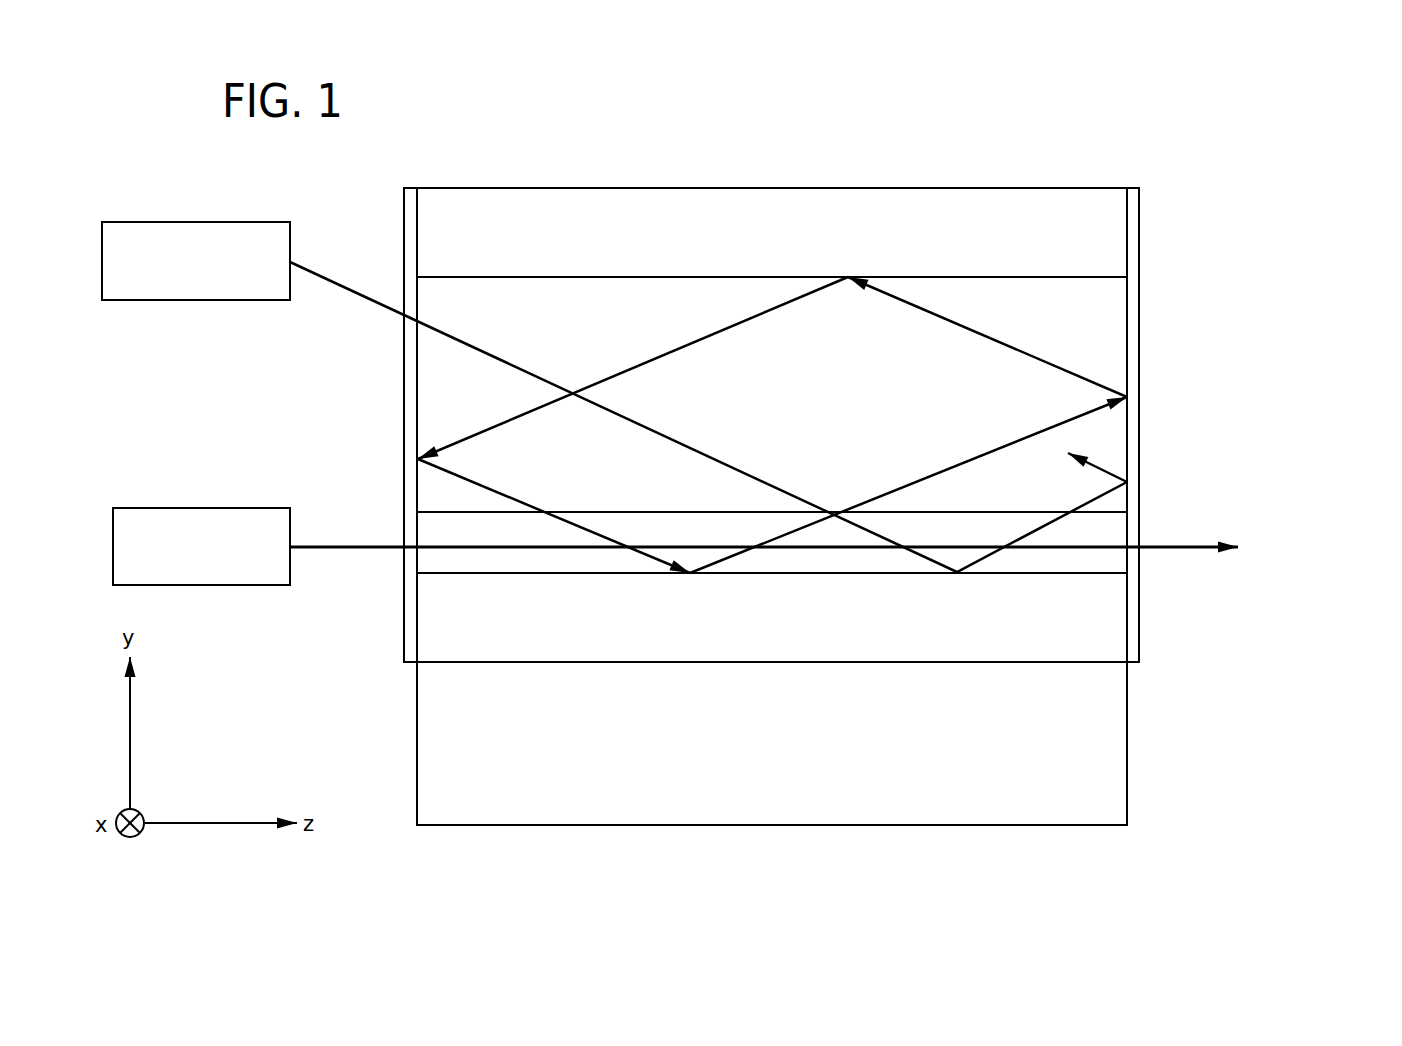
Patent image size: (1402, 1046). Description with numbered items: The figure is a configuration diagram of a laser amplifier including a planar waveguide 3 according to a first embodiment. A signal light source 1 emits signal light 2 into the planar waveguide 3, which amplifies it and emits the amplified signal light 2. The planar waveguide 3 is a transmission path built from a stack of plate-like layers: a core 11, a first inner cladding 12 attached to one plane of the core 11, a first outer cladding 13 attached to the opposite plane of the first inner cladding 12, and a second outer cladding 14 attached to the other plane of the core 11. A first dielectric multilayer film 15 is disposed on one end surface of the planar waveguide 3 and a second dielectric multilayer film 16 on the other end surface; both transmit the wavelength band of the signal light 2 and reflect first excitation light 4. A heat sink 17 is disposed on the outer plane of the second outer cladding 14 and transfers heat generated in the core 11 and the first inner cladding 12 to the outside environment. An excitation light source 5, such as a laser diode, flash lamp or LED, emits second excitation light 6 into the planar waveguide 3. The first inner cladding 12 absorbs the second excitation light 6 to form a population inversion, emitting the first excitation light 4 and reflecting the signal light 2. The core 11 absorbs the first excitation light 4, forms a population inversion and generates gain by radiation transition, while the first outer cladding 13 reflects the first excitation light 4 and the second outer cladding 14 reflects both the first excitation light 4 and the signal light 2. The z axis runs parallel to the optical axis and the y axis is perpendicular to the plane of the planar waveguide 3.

The signal light source 1 is at (250, 508).
The signal light 2 is at (325, 545).
The planar waveguide 3 is at (772, 186).
The first excitation light 4 is at (487, 426).
The excitation light source 5 is at (246, 222).
The second excitation light 6 is at (340, 286).
The core 11 is at (1110, 524).
The first inner cladding 12 is at (1108, 318).
The first outer cladding 13 is at (1108, 232).
The second outer cladding 14 is at (1110, 613).
The first dielectric multilayer film 15 is at (410, 209).
The second dielectric multilayer film 16 is at (1133, 200).
The heat sink 17 is at (1108, 753).